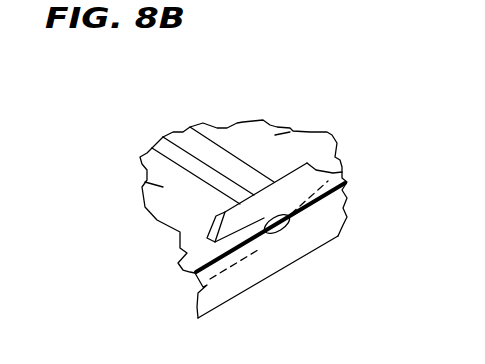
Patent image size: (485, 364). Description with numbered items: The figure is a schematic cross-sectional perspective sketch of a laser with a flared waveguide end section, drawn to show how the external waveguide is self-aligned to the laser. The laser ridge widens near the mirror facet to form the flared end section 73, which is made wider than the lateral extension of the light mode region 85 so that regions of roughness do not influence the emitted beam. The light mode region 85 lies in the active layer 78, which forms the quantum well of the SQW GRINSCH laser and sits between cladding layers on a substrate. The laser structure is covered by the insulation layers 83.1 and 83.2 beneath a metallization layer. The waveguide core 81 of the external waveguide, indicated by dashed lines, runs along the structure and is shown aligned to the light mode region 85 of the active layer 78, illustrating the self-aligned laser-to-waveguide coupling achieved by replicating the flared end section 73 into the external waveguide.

The flared end section 73 is at (271, 186).
The active layer 78 is at (194, 272).
The waveguide core 81 is at (349, 187).
The insulation layer 83.1 is at (140, 158).
The insulation layer 83.2 is at (290, 128).
The light mode region 85 is at (287, 228).